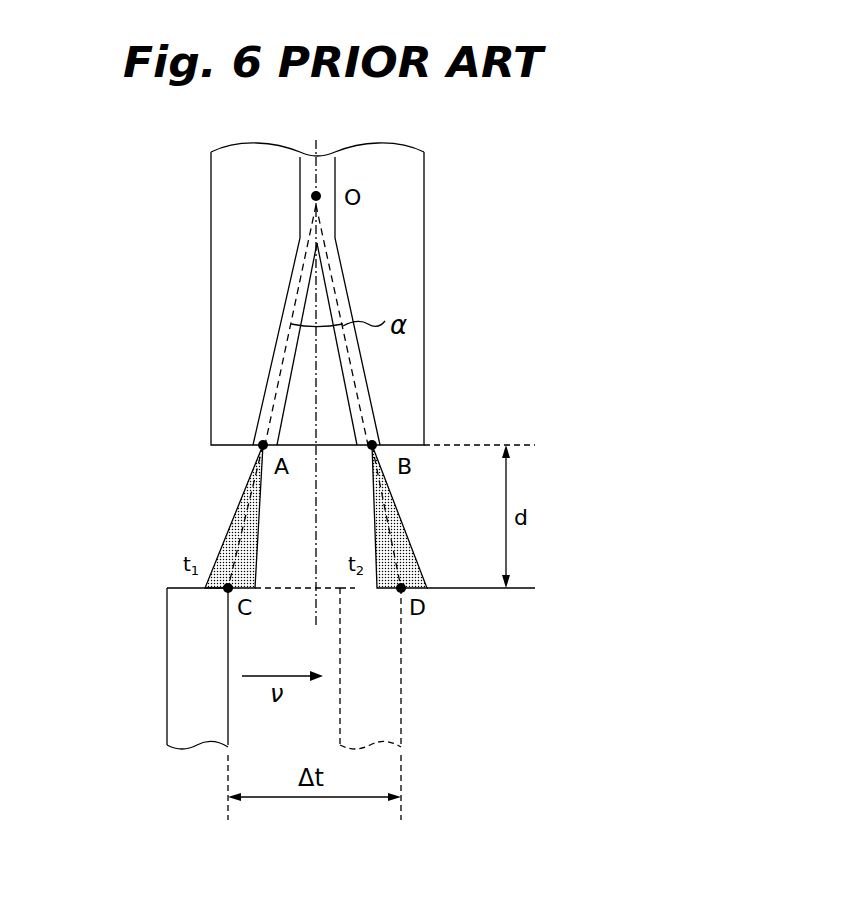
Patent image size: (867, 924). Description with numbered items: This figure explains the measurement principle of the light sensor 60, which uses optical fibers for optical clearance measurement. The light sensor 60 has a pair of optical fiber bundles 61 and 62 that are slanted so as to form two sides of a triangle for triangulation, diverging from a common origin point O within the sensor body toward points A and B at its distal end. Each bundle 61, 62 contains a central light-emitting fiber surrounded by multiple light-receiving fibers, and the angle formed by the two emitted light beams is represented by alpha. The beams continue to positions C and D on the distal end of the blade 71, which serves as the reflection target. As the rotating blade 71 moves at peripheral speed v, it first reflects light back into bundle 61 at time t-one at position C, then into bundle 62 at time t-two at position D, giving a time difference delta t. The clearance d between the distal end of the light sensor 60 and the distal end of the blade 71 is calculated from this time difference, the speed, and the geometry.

The light sensor 60 is at (424, 181).
The optical fiber bundle 61 is at (267, 393).
The optical fiber bundle 62 is at (368, 392).
The blade 71 is at (185, 699).